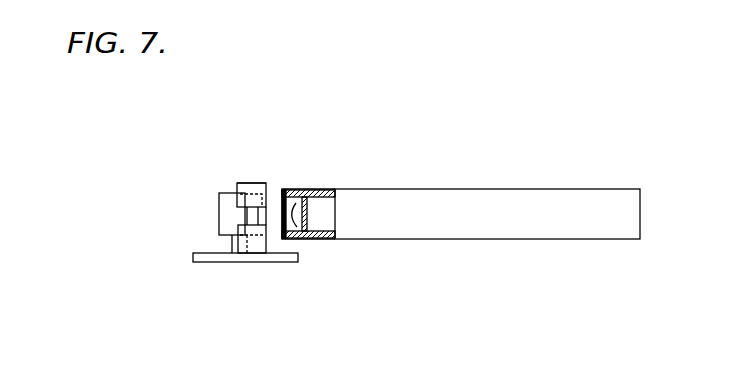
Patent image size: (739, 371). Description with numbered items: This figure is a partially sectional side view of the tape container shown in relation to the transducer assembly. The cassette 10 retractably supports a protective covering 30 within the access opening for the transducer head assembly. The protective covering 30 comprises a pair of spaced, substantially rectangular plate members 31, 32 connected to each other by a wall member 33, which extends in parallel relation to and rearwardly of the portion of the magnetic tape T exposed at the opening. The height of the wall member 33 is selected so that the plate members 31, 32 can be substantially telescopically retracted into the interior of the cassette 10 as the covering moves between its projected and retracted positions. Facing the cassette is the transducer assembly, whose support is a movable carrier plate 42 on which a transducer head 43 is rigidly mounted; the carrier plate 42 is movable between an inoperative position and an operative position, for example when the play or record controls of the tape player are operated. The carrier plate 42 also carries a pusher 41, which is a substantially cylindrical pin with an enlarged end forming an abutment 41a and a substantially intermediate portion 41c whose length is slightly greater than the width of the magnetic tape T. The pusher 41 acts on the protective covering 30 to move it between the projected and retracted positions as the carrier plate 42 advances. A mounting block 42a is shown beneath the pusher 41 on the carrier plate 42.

The cassette 10 is at (502, 219).
The protective covering 30 is at (318, 221).
The plate member 31 is at (308, 189).
The plate member 32 is at (316, 238).
The wall member 33 is at (307, 208).
The magnetic tape T is at (298, 228).
The pusher 41 is at (260, 183).
The abutment 41a is at (238, 183).
The intermediate portion 41c is at (247, 212).
The movable carrier plate 42 is at (218, 258).
The mounting block 42a is at (257, 246).
The transducer head 43 is at (217, 212).